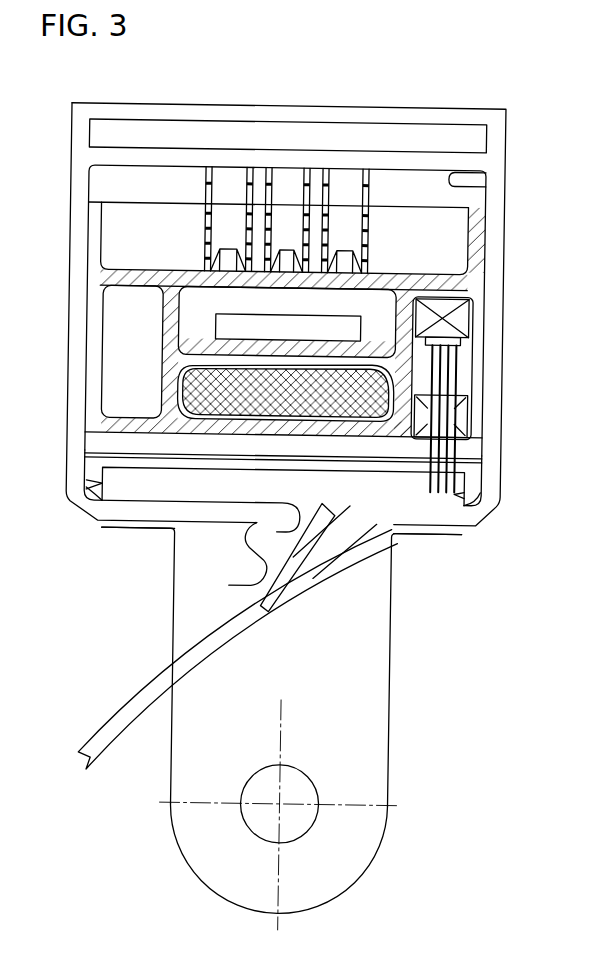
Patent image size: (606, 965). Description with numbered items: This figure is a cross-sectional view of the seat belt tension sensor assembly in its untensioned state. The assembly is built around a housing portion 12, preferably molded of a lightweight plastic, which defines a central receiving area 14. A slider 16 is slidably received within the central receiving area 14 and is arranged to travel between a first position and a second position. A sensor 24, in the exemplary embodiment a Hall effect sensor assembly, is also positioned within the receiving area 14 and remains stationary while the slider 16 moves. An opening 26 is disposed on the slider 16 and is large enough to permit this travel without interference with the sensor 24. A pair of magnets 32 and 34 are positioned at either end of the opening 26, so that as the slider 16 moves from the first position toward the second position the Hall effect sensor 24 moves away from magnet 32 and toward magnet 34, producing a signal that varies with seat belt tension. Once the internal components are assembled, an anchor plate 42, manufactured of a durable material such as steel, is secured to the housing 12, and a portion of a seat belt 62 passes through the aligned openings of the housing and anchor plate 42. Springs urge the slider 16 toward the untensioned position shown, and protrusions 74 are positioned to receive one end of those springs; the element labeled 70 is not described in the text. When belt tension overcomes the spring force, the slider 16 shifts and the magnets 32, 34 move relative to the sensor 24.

The housing portion 12 is at (507, 218).
The central receiving area 14 is at (487, 180).
The slider 16 is at (487, 277).
The sensor 24 is at (452, 340).
The opening 26 is at (464, 372).
The magnet 32 is at (462, 315).
The magnet 34 is at (462, 413).
The anchor plate 42 is at (398, 597).
The seat belt 62 is at (188, 389).
The mesh element 70 is at (392, 382).
The protrusions 74 is at (342, 247).